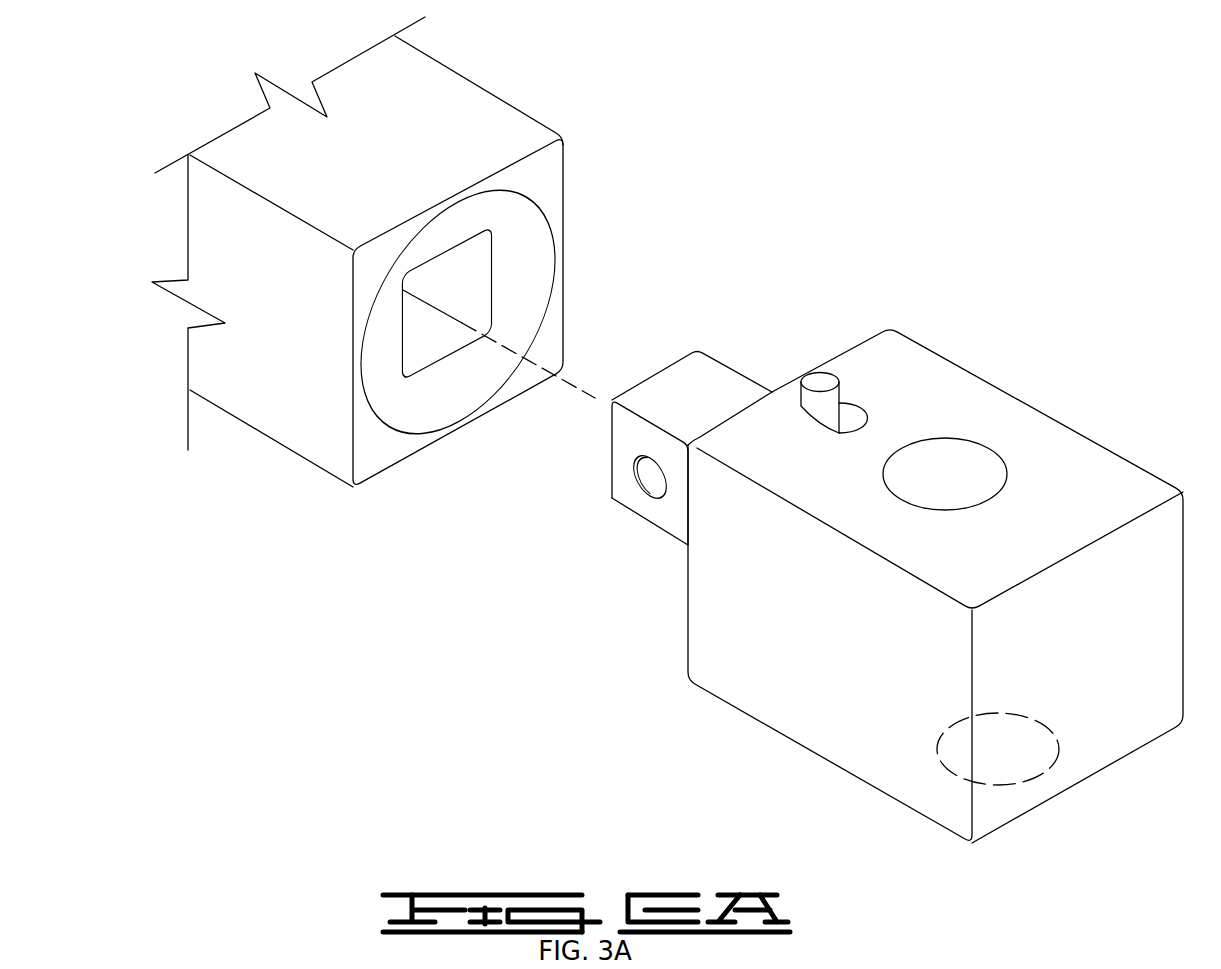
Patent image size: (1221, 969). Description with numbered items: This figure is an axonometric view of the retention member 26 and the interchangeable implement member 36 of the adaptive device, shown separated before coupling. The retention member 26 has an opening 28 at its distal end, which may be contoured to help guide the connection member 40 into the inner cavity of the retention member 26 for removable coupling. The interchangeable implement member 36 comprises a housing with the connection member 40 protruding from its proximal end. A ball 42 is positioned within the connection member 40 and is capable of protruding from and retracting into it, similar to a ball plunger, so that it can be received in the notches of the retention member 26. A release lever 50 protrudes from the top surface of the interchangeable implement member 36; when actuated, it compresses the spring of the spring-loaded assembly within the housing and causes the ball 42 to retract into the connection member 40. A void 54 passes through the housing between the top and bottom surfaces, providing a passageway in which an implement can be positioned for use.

The retention member 26 is at (283, 452).
The opening 28 is at (528, 250).
The interchangeable implement member 36 is at (757, 727).
The connection member 40 is at (713, 350).
The ball 42 is at (640, 492).
The release lever 50 is at (827, 385).
The void 54 is at (990, 447).